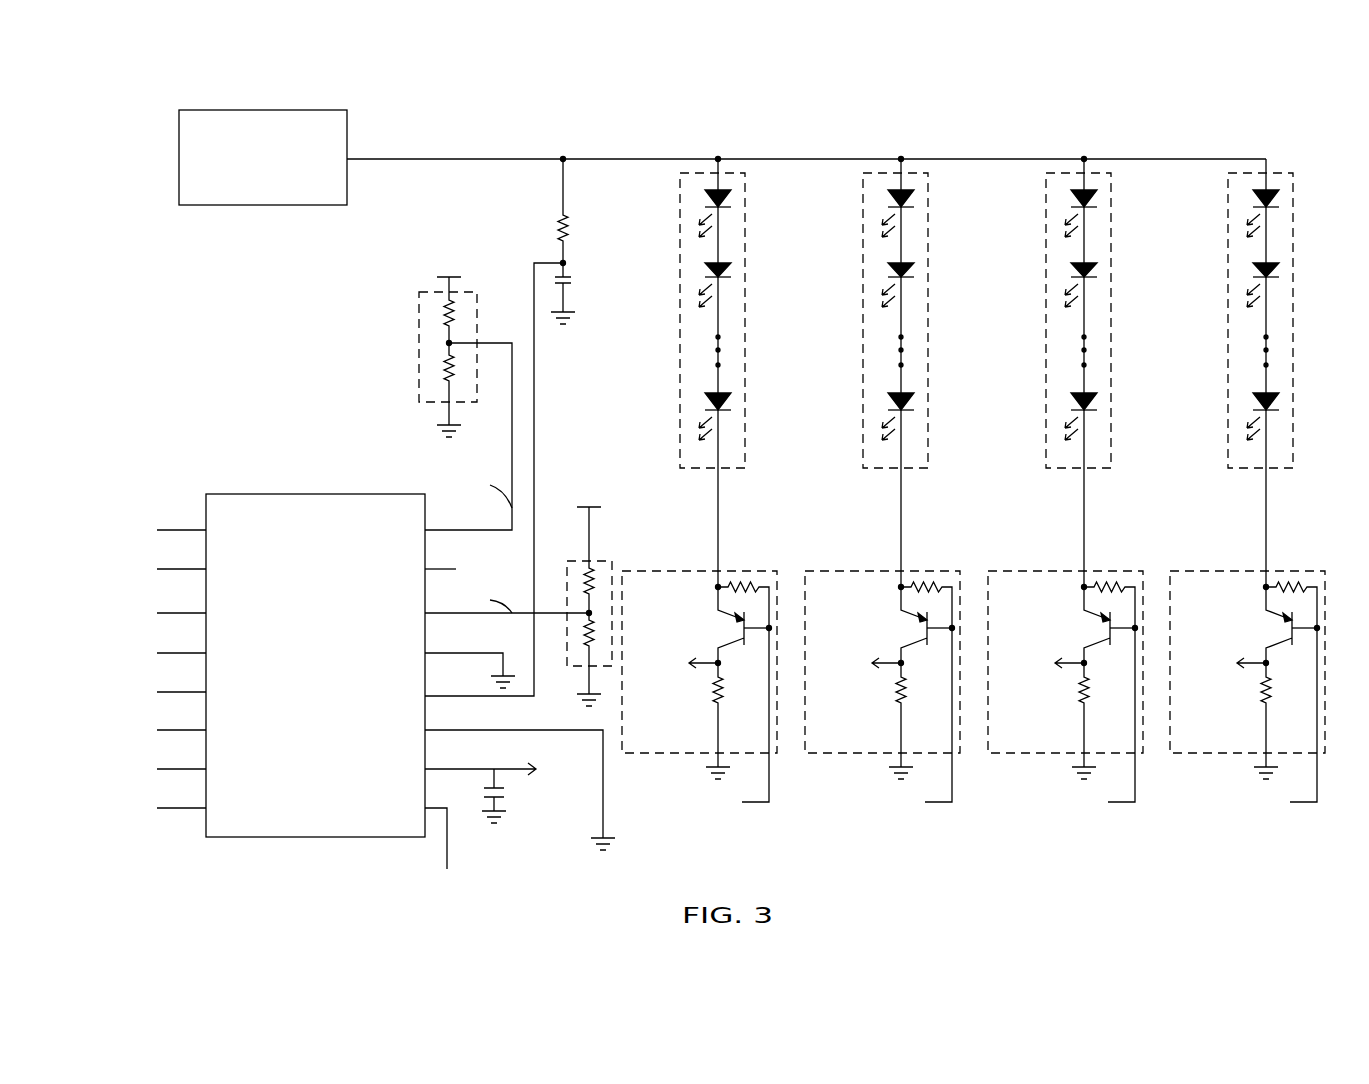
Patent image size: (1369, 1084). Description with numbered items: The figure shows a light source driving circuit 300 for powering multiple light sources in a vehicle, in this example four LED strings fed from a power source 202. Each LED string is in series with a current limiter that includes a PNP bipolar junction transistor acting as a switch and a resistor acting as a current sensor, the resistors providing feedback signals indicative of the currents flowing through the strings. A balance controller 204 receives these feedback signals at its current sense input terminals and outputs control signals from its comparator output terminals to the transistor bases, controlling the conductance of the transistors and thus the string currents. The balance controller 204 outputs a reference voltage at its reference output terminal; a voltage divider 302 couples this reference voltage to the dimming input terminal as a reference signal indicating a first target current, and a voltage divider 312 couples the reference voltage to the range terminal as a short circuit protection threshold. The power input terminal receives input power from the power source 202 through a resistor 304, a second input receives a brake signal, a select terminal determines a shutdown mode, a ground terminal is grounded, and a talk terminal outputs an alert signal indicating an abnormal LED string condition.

The light source driving circuit 300 is at (195, 333).
The power source 202 is at (240, 110).
The balance controller 204 is at (300, 837).
The voltage divider 302 is at (419, 362).
The resistor 304 is at (568, 224).
The voltage divider 312 is at (605, 562).